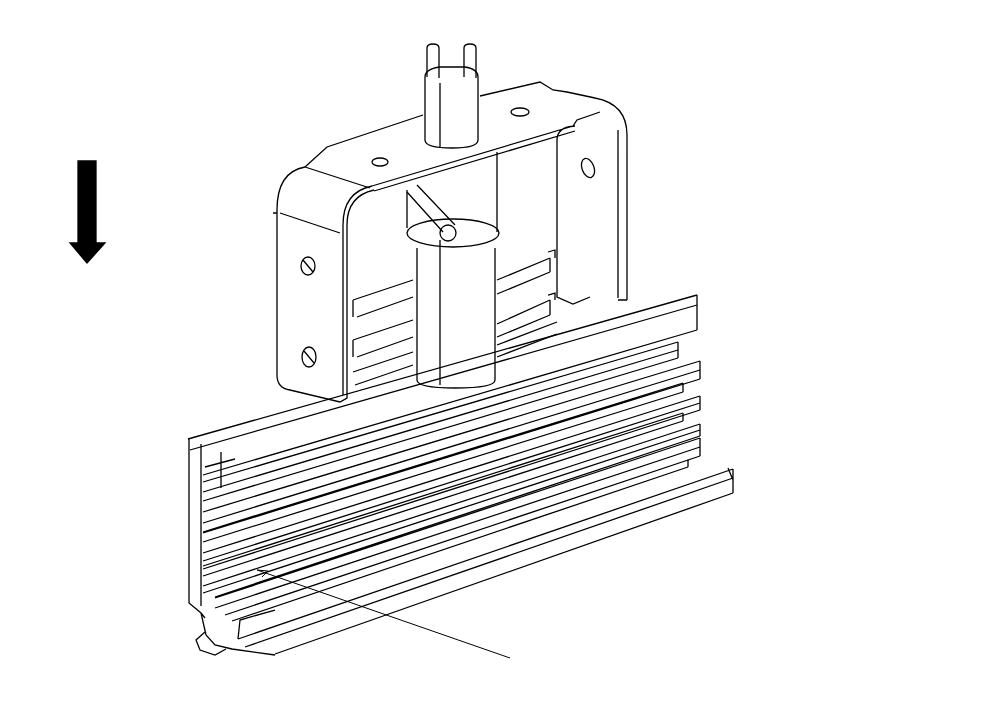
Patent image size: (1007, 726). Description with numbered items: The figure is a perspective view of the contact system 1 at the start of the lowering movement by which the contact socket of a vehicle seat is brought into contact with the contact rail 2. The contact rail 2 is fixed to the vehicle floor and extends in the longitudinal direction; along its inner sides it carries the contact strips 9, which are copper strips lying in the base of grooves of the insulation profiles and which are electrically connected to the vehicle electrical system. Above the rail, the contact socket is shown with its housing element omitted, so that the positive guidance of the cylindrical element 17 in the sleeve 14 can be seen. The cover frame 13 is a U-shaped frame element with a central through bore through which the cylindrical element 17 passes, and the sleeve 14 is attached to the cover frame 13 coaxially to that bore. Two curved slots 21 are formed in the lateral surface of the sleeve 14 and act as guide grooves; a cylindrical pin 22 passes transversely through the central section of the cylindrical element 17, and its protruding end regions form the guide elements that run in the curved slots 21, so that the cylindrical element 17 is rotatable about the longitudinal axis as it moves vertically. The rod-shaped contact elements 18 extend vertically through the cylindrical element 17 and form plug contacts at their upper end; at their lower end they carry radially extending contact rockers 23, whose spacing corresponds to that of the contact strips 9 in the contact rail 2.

The contact system 1 is at (800, 202).
The contact rail 2 is at (207, 437).
The contact strips 9 is at (680, 380).
The cover frame 13 is at (338, 163).
The sleeve 14 is at (470, 187).
The cylindrical element 17 is at (470, 273).
The contact elements 18 is at (463, 68).
The curved slots 21 is at (443, 231).
The pin 22 is at (445, 233).
The contact rockers 23 is at (552, 272).